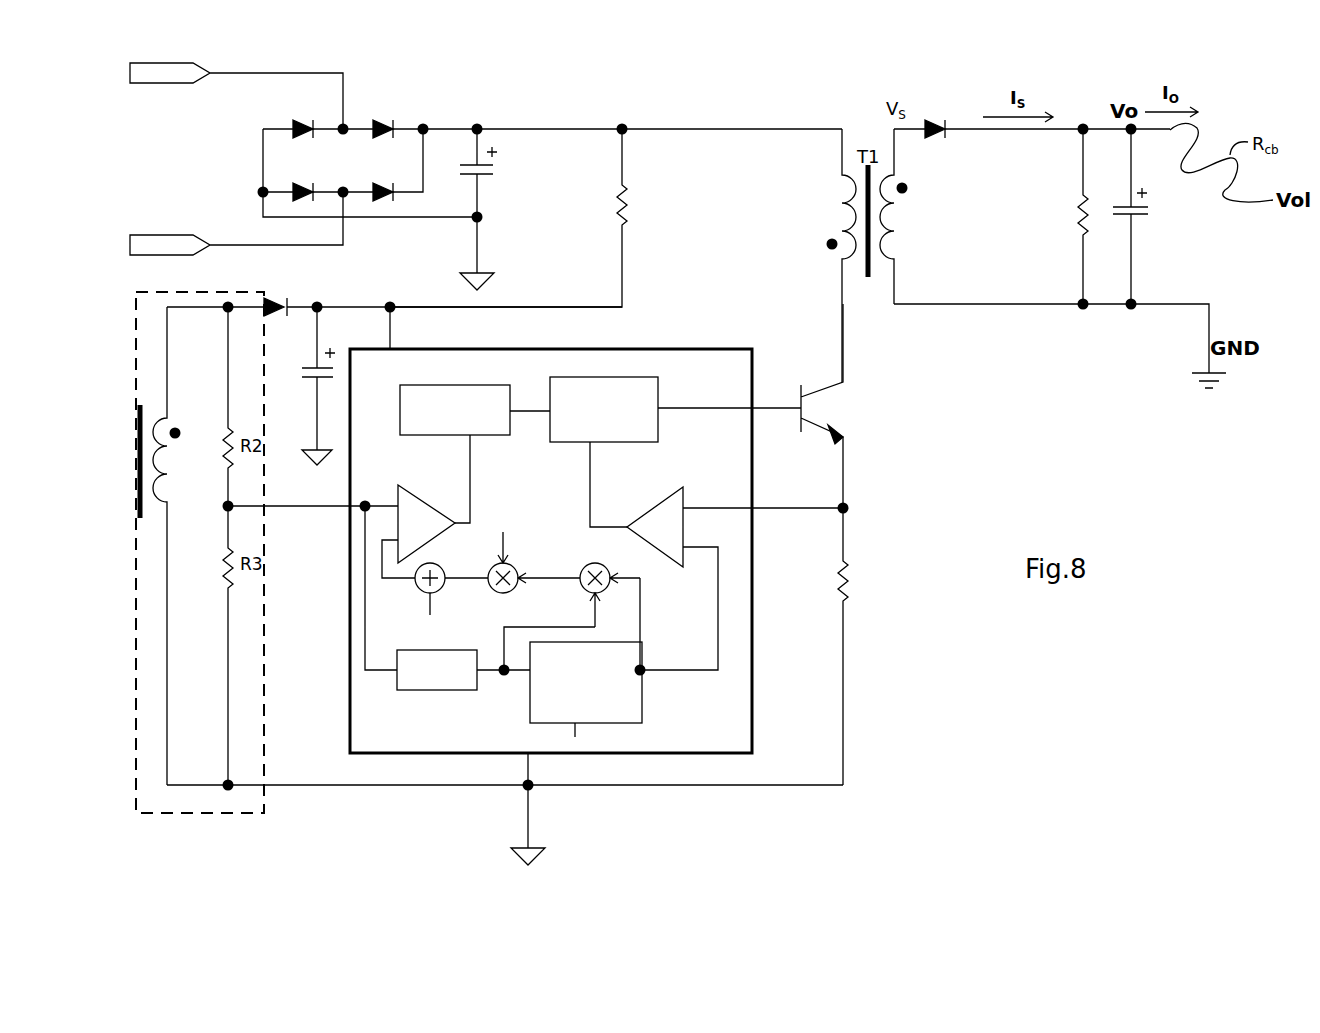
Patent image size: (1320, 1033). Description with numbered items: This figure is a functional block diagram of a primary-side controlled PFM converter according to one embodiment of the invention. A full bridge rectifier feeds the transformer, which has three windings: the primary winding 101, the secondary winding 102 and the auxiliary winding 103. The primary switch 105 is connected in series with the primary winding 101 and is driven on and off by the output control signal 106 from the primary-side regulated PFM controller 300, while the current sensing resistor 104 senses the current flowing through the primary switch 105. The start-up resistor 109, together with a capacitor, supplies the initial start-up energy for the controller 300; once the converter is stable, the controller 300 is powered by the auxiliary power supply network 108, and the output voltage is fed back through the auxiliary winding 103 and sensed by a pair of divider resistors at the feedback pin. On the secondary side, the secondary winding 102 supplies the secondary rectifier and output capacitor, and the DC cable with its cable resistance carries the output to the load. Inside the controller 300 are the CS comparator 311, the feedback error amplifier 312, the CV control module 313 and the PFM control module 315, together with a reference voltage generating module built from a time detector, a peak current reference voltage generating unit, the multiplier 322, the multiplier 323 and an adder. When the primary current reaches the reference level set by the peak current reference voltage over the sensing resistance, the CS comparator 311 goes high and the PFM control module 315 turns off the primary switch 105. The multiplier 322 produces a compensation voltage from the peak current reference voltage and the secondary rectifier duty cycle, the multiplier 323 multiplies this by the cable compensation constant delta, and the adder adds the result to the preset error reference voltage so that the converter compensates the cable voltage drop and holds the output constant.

The primary winding 101 is at (838, 195).
The secondary winding 102 is at (903, 222).
The auxiliary winding 103 is at (148, 400).
The current sensing resistor Rcs 104 is at (863, 582).
The primary switch 105 is at (844, 406).
The output control signal 106 is at (778, 405).
The auxiliary power supply network 108 is at (250, 808).
The resistor 109 is at (632, 208).
The primary-side regulated PFM controller 300 is at (612, 349).
The CS comparator 311 is at (665, 528).
The feedback error amplifier 312 is at (407, 510).
The CV control module 313 is at (513, 421).
The PFM control module 315 is at (653, 427).
The multiplier 322 is at (590, 564).
The multiplier 323 is at (512, 560).